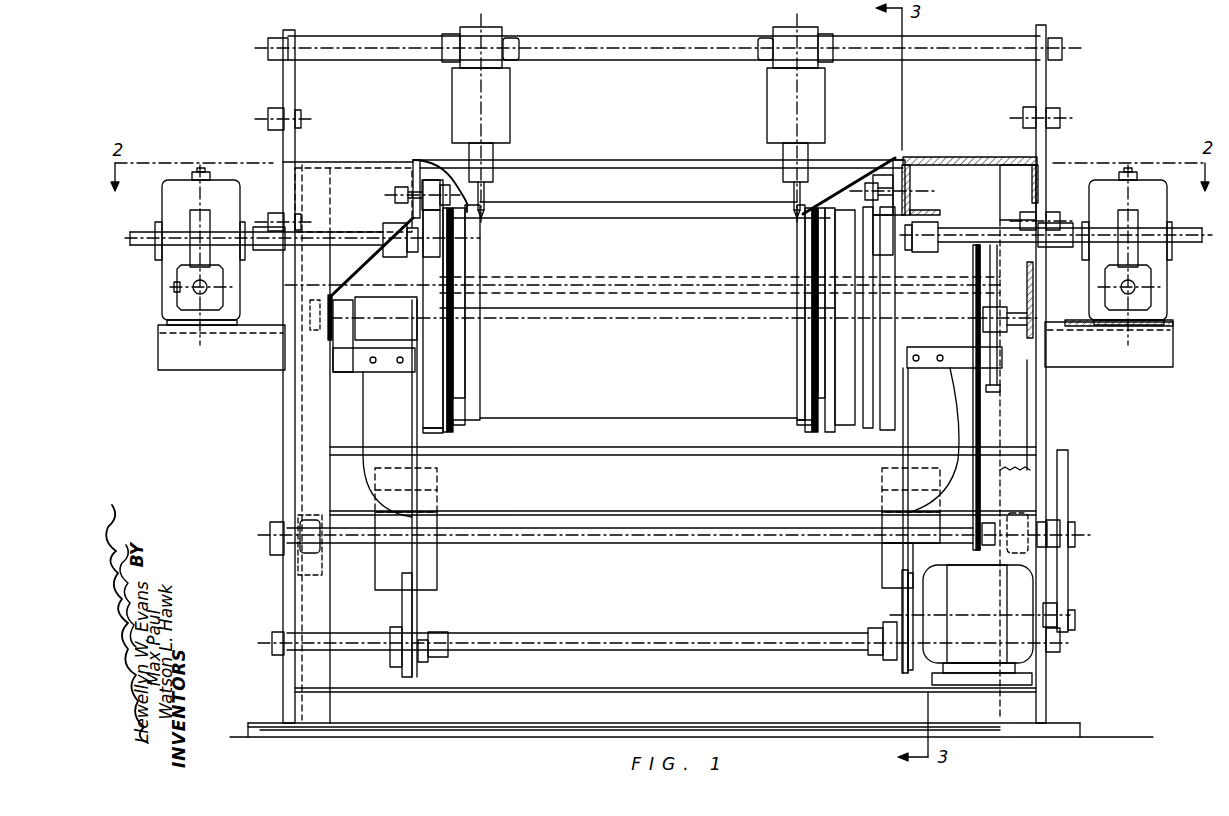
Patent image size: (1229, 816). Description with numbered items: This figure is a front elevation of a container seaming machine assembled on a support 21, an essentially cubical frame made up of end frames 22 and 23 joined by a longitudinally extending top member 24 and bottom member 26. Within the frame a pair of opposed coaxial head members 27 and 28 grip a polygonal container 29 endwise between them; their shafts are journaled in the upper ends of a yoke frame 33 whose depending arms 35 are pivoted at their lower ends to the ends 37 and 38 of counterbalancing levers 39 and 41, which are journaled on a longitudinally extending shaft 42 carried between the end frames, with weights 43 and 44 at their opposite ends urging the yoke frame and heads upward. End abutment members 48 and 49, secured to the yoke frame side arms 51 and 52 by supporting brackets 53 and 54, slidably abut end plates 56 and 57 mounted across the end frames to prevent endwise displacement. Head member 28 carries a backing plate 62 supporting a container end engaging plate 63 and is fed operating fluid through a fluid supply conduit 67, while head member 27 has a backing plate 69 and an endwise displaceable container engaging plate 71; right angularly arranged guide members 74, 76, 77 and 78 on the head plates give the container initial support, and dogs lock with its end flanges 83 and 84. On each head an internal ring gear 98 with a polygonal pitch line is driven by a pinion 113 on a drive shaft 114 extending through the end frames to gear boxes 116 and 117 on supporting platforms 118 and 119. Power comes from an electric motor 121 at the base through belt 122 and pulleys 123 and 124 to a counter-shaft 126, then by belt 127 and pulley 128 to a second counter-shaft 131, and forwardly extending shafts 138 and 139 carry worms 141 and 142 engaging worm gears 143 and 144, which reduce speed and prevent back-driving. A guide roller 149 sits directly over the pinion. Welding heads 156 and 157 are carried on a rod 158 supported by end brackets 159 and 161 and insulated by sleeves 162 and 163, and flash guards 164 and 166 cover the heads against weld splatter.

The support 21 is at (283, 478).
The end frame 22 is at (283, 452).
The end frame 23 is at (1042, 395).
The top member 24 is at (672, 160).
The bottom member 26 is at (637, 722).
The head member 27 is at (448, 440).
The head member 28 is at (820, 441).
The polygonal container 29 is at (663, 412).
The yoke frame 33 is at (603, 511).
The depending arms 35 is at (420, 562).
The lever end 37 is at (422, 670).
The lever end 38 is at (900, 668).
The counterbalancing lever 39 is at (404, 606).
The counterbalancing lever 41 is at (902, 601).
The shaft 42 is at (649, 636).
The weight 43 is at (436, 584).
The weight 44 is at (885, 577).
The end abutment member 48 is at (330, 342).
The end abutment member 49 is at (1030, 330).
The side arm 51 is at (363, 412).
The side arm 52 is at (918, 414).
The supporting bracket 53 is at (353, 365).
The supporting bracket 54 is at (947, 368).
The end plate 56 is at (310, 333).
The end plate 57 is at (1034, 275).
The backing plate 62 is at (820, 336).
The container end engaging plate 63 is at (800, 407).
The fluid supply conduit 67 is at (1000, 382).
The backing plate 69 is at (450, 413).
The container engaging plate 71 is at (478, 235).
The guide member 74 is at (458, 425).
The guide member 76 is at (468, 368).
The guide member 77 is at (808, 426).
The guide member 78 is at (806, 305).
The end flange 83 is at (482, 342).
The end flange 84 is at (800, 230).
The internal ring gear 98 is at (425, 430).
The pinion 113 is at (444, 245).
The drive shaft 114 is at (352, 238).
The gear box 116 is at (172, 290).
The gear box 117 is at (1165, 292).
The supporting platform 118 is at (188, 366).
The supporting platform 119 is at (1163, 360).
The electric motor 121 is at (958, 609).
The belt 122 is at (1069, 590).
The pulley 123 is at (1074, 621).
The pulley 124 is at (1075, 524).
The counter-shaft 126 is at (690, 544).
The belt 127 is at (975, 430).
The pulley 128 is at (988, 548).
The second counter-shaft 131 is at (690, 280).
The forwardly extending shaft 138 is at (196, 285).
The forwardly extending shaft 139 is at (1132, 285).
The worm 141 is at (176, 297).
The worm 142 is at (1150, 306).
The worm gear 143 is at (190, 215).
The worm gear 144 is at (1140, 215).
The roller 149 is at (912, 158).
The welding head 156 is at (505, 127).
The welding head 157 is at (771, 110).
The rod 158 is at (663, 60).
The end bracket 159 is at (283, 90).
The end bracket 161 is at (1048, 92).
The insulation sleeve 162 is at (512, 36).
The insulation sleeve 163 is at (763, 36).
The flash guard 164 is at (420, 160).
The flash guard 166 is at (885, 165).